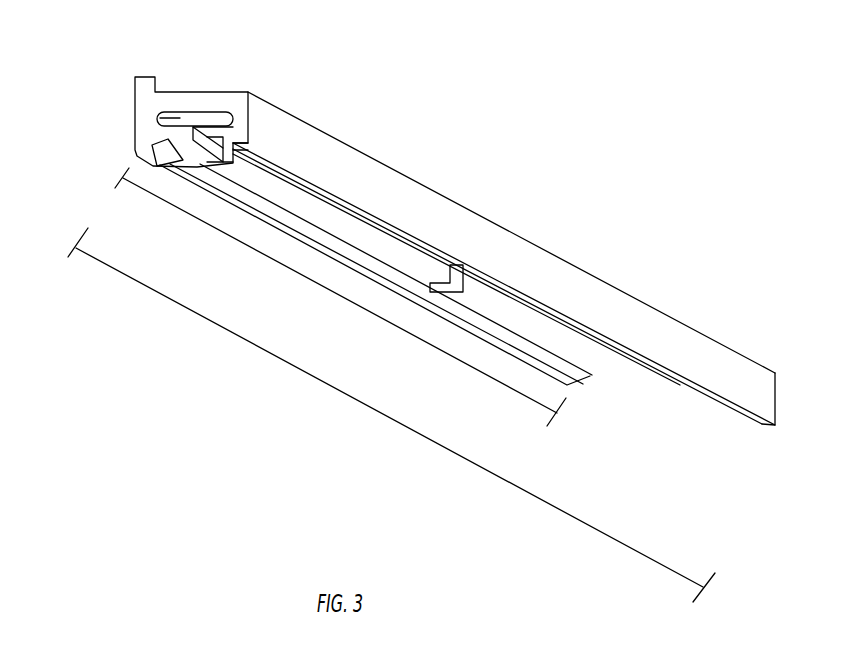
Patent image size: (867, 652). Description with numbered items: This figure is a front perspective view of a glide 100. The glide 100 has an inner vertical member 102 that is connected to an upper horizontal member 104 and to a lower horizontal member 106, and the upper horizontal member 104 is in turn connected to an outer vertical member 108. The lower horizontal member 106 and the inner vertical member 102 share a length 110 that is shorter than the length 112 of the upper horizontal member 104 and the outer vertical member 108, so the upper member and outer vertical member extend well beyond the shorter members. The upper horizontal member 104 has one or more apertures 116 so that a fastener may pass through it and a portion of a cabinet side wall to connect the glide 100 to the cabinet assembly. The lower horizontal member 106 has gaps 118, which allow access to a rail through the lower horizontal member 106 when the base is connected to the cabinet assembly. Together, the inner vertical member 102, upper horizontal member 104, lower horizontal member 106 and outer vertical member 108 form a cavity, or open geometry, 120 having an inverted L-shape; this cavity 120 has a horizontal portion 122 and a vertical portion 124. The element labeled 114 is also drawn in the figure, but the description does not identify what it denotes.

The glide 100 is at (511, 223).
The inner vertical member 102 is at (141, 102).
The upper horizontal member 104 is at (237, 64).
The lower horizontal member 106 is at (120, 161).
The outer vertical member 108 is at (766, 351).
The length 110 is at (340, 297).
The length 112 is at (391, 427).
The slider bar 114 is at (206, 88).
The aperture 116 is at (424, 317).
The gaps 118 is at (373, 194).
The cavity 120 is at (161, 66).
The horizontal portion 122 is at (138, 117).
The vertical portion 124 is at (281, 98).